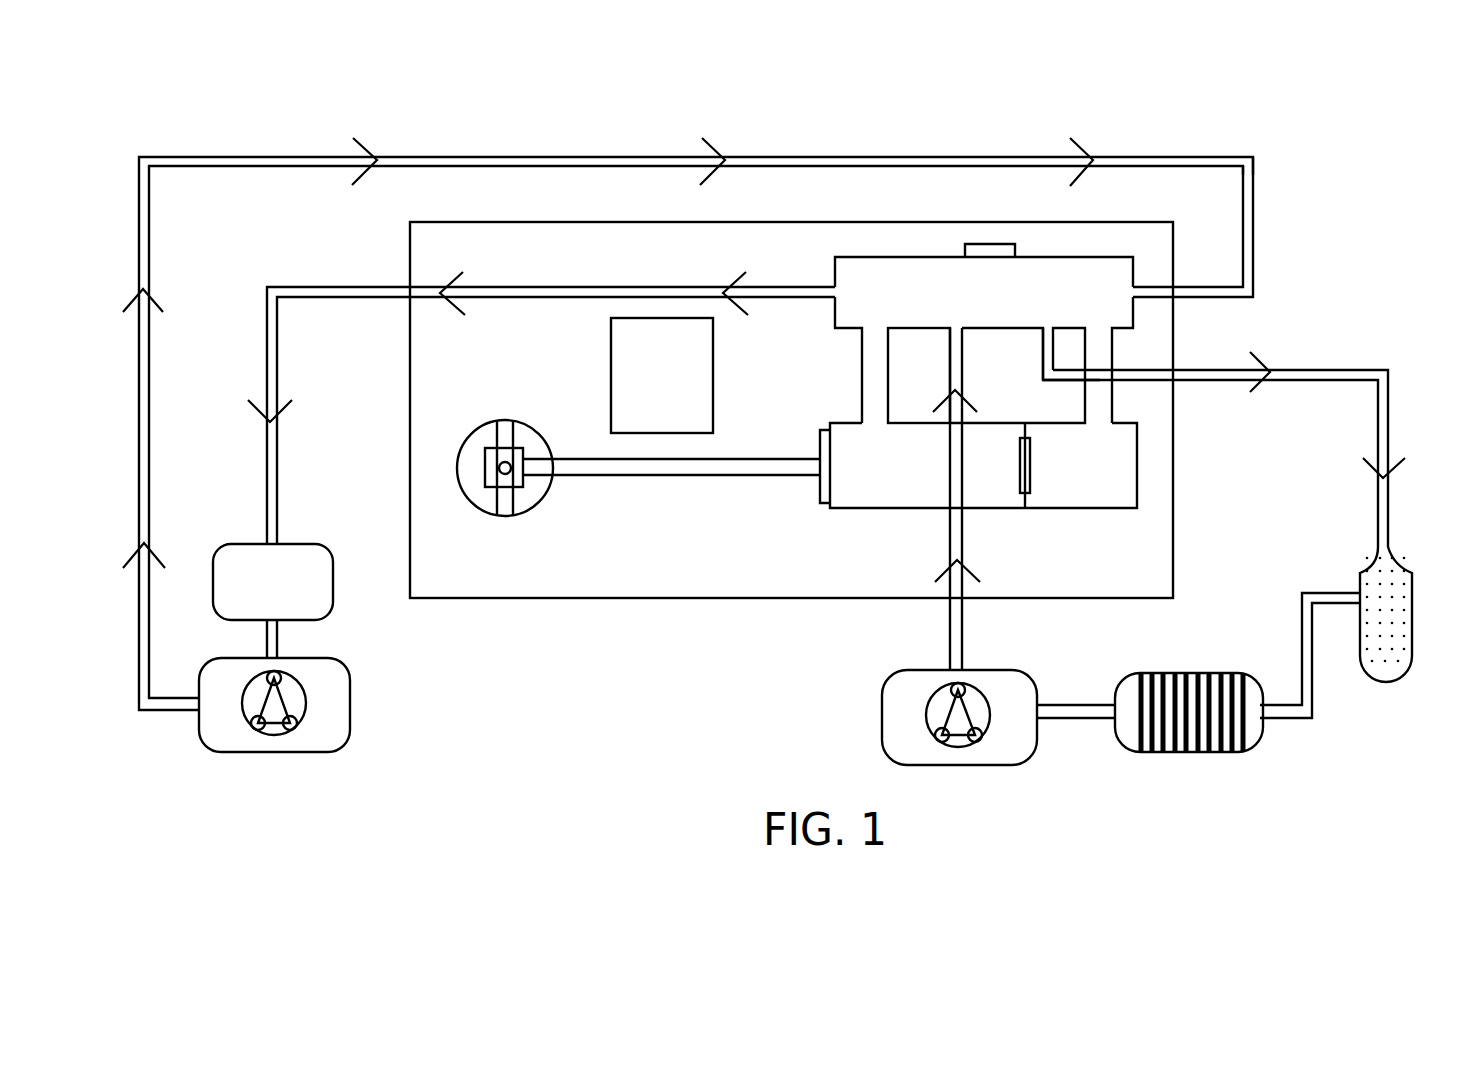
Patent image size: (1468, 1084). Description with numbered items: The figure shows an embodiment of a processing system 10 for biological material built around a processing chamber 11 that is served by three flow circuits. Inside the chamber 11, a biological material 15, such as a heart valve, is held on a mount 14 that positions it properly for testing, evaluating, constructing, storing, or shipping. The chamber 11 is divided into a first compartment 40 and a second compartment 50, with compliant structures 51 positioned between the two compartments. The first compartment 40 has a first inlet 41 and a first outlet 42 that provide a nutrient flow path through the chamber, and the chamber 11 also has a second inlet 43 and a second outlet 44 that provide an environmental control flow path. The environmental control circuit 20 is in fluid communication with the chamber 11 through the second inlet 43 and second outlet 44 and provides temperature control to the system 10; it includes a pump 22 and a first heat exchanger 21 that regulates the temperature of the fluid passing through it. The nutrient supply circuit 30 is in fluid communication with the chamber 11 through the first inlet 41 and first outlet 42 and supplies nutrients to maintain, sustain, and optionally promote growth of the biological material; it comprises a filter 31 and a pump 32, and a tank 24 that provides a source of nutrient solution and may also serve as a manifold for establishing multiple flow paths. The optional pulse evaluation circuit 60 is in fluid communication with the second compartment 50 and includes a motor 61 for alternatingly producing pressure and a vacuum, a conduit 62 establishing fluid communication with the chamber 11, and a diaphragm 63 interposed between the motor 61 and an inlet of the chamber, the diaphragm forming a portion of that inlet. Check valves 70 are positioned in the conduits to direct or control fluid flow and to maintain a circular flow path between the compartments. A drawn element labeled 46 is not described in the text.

The system 10 is at (646, 724).
The processing chamber 11 is at (1000, 416).
The mount 14 is at (1027, 495).
The biological material 15 is at (1030, 465).
The environmental control circuit 20 is at (146, 358).
The first heat exchanger 21 is at (315, 602).
The pump 22 is at (330, 738).
The tank 24 is at (1135, 672).
The nutrient supply circuit 30 is at (1300, 368).
The filter 31 is at (1395, 614).
The pump 32 is at (1005, 745).
The first compartment 40 is at (980, 306).
The first inlet 41 is at (962, 330).
The first outlet 42 is at (1043, 330).
The second inlet 43 is at (1140, 285).
The second outlet 44 is at (833, 283).
The vent 46 is at (985, 255).
The second compartment 50 is at (871, 481).
The compliant structures 51 is at (887, 370).
The pulse evaluation circuit 60 is at (598, 478).
The motor 61 is at (527, 495).
The conduit 62 is at (688, 478).
The diaphragm 63 is at (818, 468).
The check valve 70 is at (270, 422).